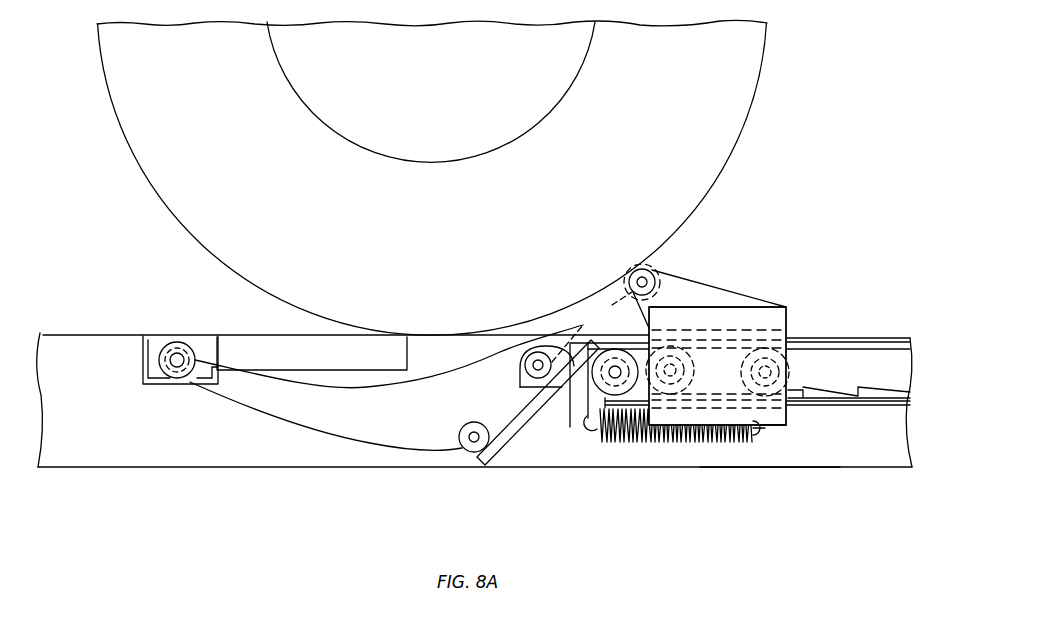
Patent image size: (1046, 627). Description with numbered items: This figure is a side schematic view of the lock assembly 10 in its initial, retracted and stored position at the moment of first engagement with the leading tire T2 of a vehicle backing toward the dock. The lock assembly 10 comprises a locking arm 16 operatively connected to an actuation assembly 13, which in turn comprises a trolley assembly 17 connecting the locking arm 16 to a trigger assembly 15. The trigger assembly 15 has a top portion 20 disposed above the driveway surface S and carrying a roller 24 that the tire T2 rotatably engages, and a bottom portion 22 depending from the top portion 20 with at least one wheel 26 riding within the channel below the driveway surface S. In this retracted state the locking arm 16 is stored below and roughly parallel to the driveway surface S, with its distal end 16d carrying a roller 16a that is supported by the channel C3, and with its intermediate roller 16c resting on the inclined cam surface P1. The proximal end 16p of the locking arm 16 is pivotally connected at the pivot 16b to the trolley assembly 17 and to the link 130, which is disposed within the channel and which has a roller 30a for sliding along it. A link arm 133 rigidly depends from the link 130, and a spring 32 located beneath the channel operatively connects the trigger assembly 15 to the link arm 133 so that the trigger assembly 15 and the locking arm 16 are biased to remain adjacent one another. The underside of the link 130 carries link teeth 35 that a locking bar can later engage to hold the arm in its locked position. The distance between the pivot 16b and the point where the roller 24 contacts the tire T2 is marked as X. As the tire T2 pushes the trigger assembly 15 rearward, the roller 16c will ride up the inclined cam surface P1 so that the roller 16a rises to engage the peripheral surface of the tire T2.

The leading tire T2 is at (745, 56).
The driveway surface S is at (67, 340).
The channel C3 is at (140, 358).
The roller 16a is at (177, 347).
The distal end 16d is at (196, 356).
The locking arm 16 is at (320, 418).
The distance X is at (580, 334).
The roller 16c is at (470, 447).
The proximal end 16p is at (518, 372).
The pivot 16b is at (527, 357).
The inclined cam surface P1 is at (541, 406).
The roller 30a is at (590, 352).
The link arm 133 is at (581, 447).
The trolley assembly 17 is at (647, 457).
The wheel 26 is at (689, 368).
The top portion 20 is at (773, 304).
The roller 24 is at (650, 266).
The trigger assembly 15 is at (690, 278).
The link 130 is at (885, 360).
The actuation assembly 13 is at (748, 455).
The link teeth 35 is at (888, 383).
The spring 32 is at (723, 445).
The bottom portion 22 is at (788, 422).
The lock assembly 10 is at (768, 475).